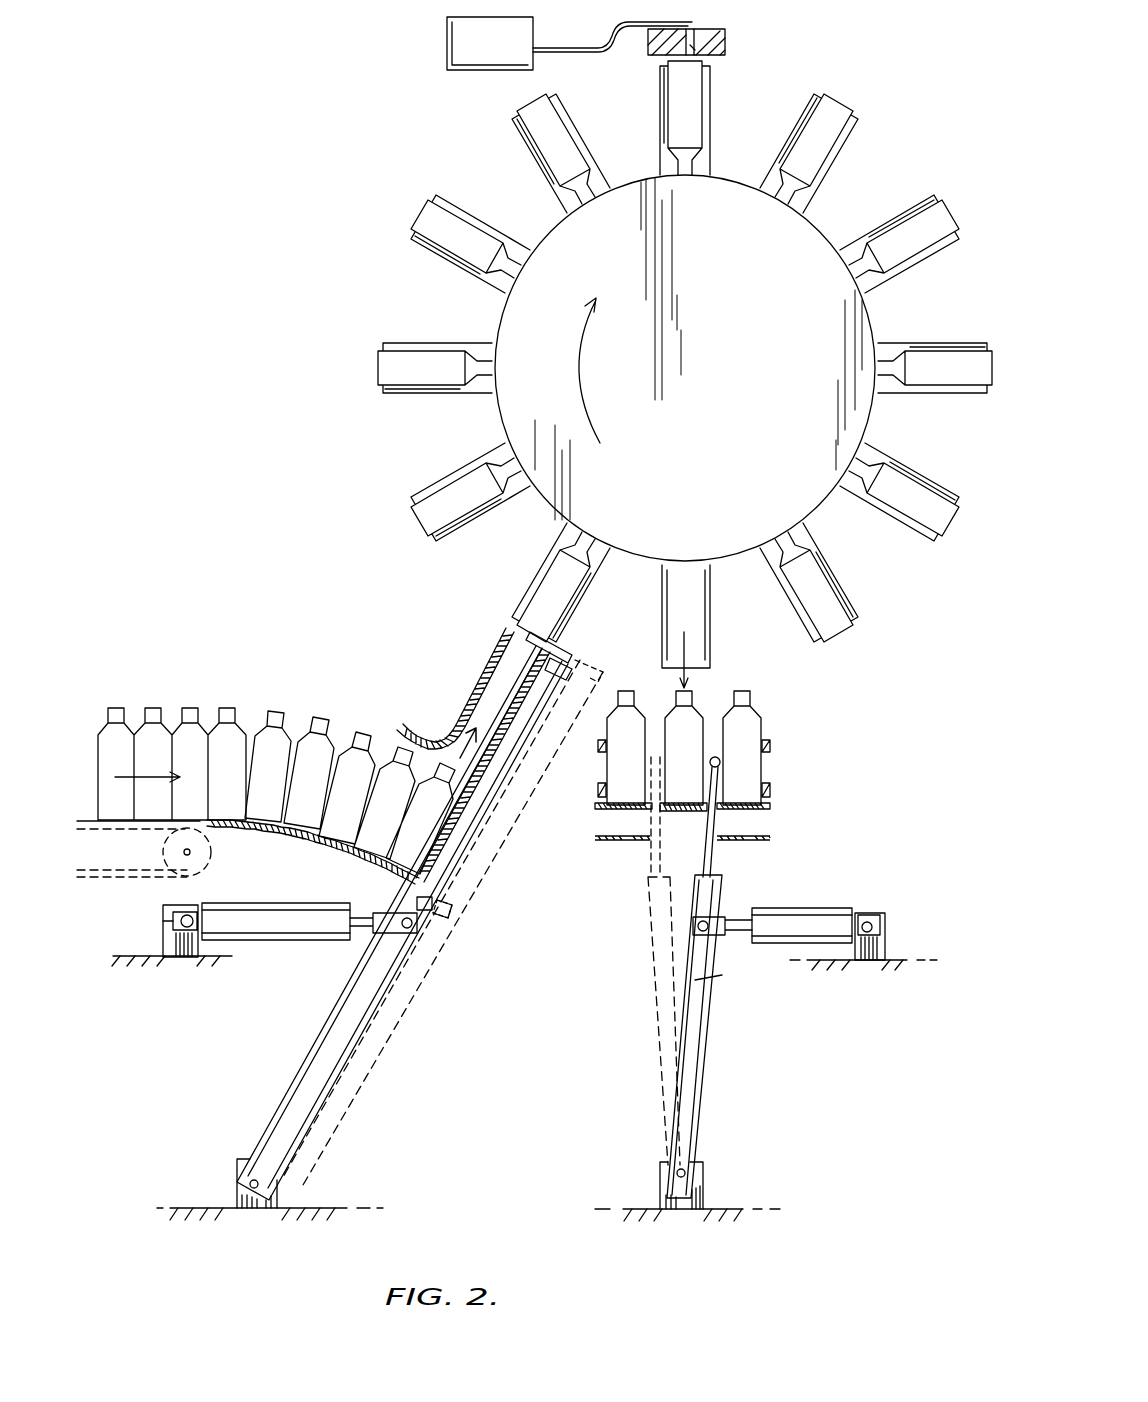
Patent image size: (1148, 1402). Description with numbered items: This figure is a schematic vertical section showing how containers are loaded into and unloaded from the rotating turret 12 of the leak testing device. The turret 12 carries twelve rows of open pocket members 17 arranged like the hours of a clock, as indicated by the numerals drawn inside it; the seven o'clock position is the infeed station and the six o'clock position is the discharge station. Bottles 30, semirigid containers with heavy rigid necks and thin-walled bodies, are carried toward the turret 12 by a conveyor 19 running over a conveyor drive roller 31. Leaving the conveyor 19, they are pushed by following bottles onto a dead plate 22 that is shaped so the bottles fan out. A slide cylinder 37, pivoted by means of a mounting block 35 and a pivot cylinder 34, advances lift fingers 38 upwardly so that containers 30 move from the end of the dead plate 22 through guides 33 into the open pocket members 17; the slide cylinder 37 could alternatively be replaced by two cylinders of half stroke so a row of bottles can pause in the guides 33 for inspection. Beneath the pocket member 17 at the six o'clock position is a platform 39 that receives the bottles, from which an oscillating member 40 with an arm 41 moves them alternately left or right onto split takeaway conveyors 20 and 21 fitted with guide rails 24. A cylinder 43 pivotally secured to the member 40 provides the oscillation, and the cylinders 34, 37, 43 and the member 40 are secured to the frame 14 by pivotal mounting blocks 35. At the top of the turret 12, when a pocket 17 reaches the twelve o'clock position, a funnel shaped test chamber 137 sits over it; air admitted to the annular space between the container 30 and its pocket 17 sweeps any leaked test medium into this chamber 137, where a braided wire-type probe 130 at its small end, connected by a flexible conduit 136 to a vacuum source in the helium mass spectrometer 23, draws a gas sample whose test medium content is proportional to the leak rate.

The rotating turret 12 is at (872, 435).
The open pocket member 17 is at (807, 158).
The helium mass spectrometer 23 is at (460, 49).
The flexible conduit 136 is at (603, 46).
The test chamber 137 is at (728, 46).
The braided wire-type probe 130 is at (695, 50).
The bottle 30 is at (230, 727).
The conveyor 19 is at (90, 877).
The conveyor drive roller 31 is at (212, 852).
The dead plate 22 is at (350, 852).
The guides 33 is at (523, 687).
The lift fingers 38 is at (568, 650).
The slide cylinder 37 is at (350, 1018).
The pivot cylinder 34 is at (265, 913).
The mounting block 35 is at (180, 948).
The frame 14 is at (142, 955).
The takeaway conveyor 20 is at (610, 808).
The platform 39 is at (697, 812).
The takeaway conveyor 21 is at (750, 831).
The guide rail 24 is at (600, 742).
The arm 41 is at (708, 855).
The oscillating member 40 is at (683, 985).
The cylinder 43 is at (780, 923).